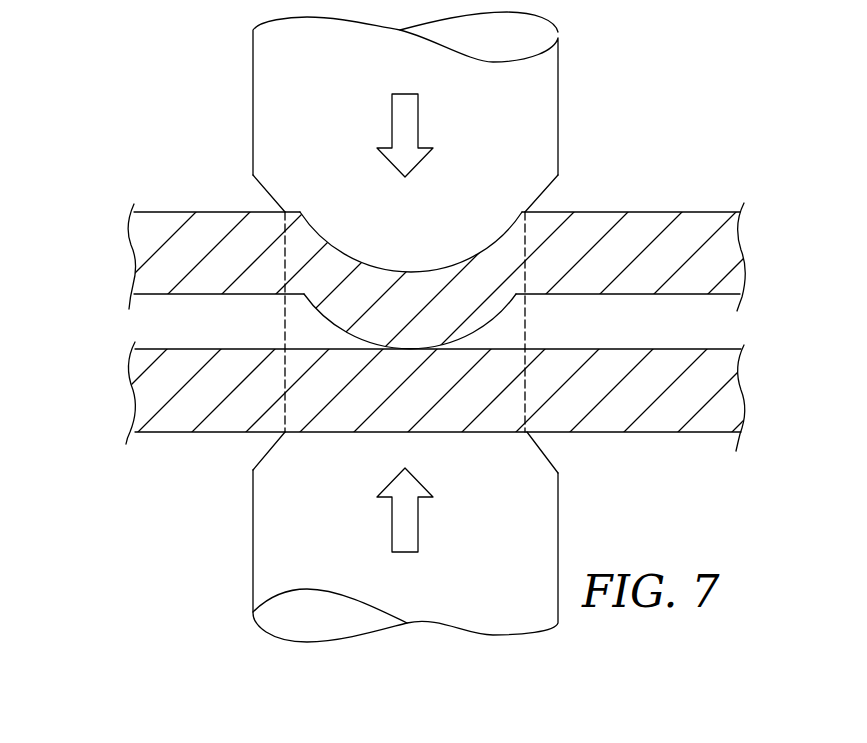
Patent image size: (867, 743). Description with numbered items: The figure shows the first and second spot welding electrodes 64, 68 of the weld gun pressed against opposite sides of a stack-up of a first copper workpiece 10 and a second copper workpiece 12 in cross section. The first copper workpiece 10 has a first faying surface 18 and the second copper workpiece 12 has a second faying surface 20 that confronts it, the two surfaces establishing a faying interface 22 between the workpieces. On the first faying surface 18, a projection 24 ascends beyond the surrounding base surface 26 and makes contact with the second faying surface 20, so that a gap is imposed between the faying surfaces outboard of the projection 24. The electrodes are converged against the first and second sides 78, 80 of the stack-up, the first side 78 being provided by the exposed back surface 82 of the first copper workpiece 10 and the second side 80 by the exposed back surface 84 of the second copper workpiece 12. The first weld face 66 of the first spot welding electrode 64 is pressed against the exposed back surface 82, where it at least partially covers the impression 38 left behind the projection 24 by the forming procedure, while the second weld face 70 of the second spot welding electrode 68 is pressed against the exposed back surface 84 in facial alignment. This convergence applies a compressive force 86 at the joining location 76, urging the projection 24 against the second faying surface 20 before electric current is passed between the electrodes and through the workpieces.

The first copper workpiece 10 is at (150, 204).
The second copper workpiece 12 is at (147, 439).
The first faying surface 18 is at (603, 295).
The second faying surface 20 is at (663, 349).
The faying interface 22 is at (148, 321).
The projection 24 is at (327, 323).
The surrounding base surface 26 is at (244, 296).
The impression 38 is at (473, 253).
The first spot welding electrode 64 is at (295, 80).
The first weld face 66 is at (368, 217).
The second spot welding electrode 68 is at (292, 547).
The second weld face 70 is at (398, 431).
The joining location 76 is at (527, 258).
The first side 78 is at (735, 200).
The second side 80 is at (698, 446).
The exposed back surface 82 is at (663, 211).
The exposed back surface 84 is at (593, 433).
The compressive force 86 is at (418, 122).